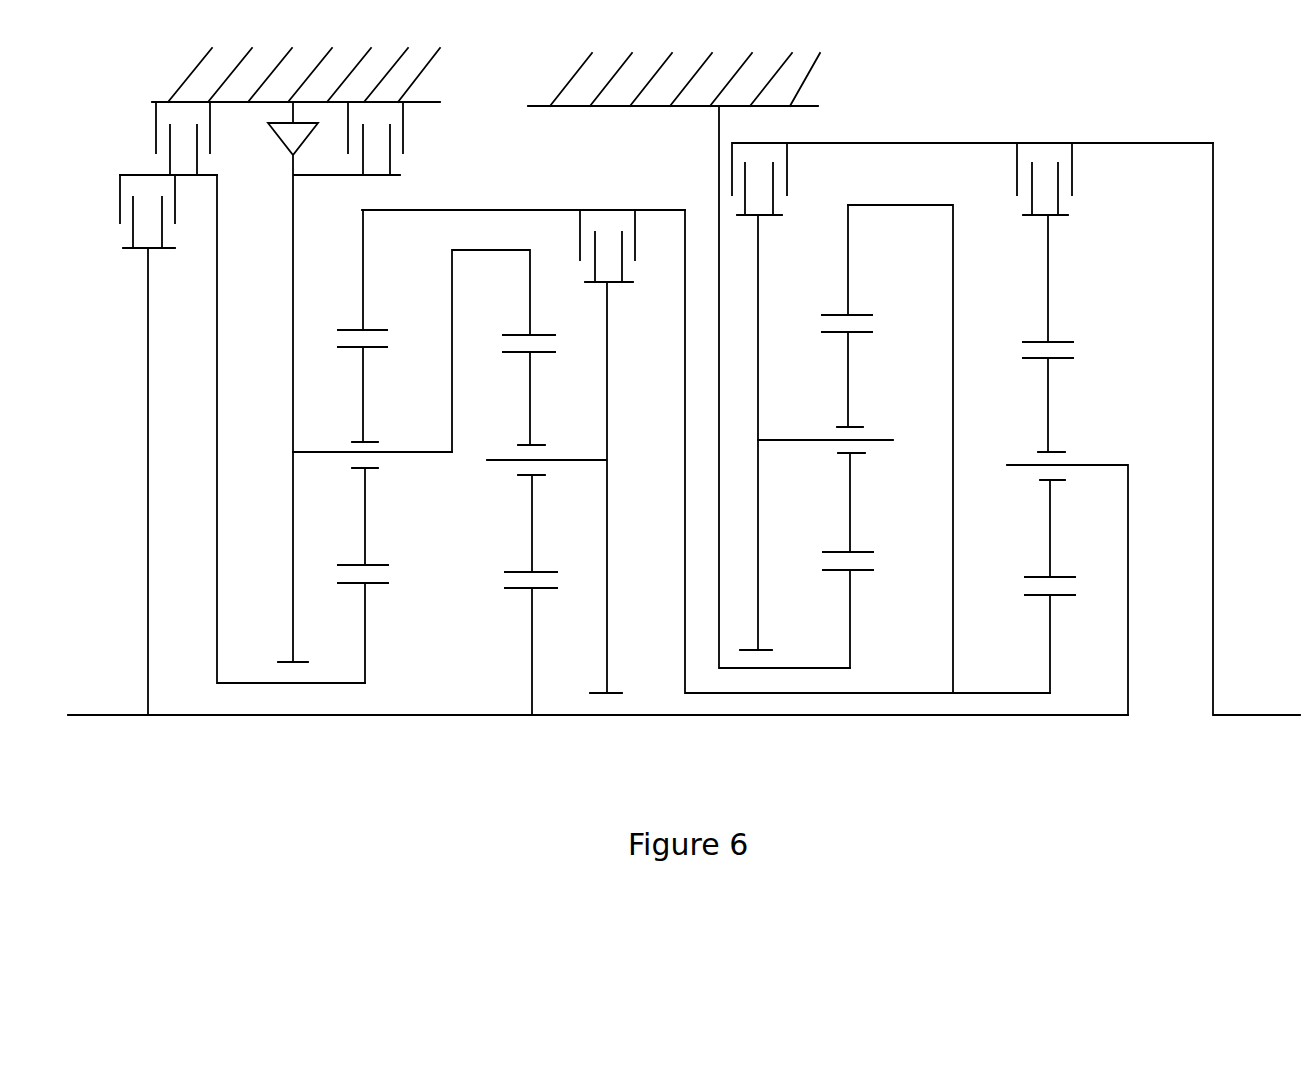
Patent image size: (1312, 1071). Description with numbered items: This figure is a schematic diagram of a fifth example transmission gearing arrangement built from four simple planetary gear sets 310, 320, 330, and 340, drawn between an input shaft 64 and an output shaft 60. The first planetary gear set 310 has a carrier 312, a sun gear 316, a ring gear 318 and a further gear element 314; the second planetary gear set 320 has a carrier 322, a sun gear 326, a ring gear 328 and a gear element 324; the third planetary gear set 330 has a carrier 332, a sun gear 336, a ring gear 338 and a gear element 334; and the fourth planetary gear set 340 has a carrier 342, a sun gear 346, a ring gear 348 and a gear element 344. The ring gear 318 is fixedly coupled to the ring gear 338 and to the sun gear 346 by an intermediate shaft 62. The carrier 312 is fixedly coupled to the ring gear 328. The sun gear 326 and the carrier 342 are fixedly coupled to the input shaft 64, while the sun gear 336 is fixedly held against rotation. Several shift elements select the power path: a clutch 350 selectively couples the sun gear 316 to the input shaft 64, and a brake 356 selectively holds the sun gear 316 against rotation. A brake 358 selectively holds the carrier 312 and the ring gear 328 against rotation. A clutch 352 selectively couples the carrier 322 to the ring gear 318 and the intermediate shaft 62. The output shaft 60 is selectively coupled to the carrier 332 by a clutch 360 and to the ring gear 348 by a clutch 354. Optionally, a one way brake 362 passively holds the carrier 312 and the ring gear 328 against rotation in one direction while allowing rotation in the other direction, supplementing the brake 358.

The output shaft 60 is at (1273, 715).
The intermediate shaft 62 is at (855, 690).
The input shaft 64 is at (178, 715).
The planetary gear set 310 is at (334, 474).
The carrier 312 is at (295, 488).
The first ring gear 314 is at (367, 403).
The sun gear 316 is at (362, 620).
The ring gear 318 is at (362, 295).
The planetary gear set 320 is at (561, 511).
The carrier 322 is at (608, 473).
The second ring gear 324 is at (535, 408).
The sun gear 326 is at (528, 627).
The ring gear 328 is at (528, 302).
The planetary gear set 330 is at (855, 489).
The carrier 332 is at (800, 442).
The third ring gear 334 is at (852, 388).
The sun gear 336 is at (850, 605).
The ring gear 338 is at (847, 282).
The planetary gear set 340 is at (1086, 539).
The carrier 342 is at (1127, 508).
The fourth ring gear 344 is at (1052, 413).
The sun gear 346 is at (1048, 632).
The ring gear 348 is at (1048, 305).
The clutch 350 is at (120, 205).
The clutch 352 is at (592, 213).
The clutch 354 is at (1073, 165).
The brake 356 is at (157, 130).
The brake 358 is at (403, 132).
The clutch 360 is at (787, 165).
The one way brake 362 is at (280, 133).